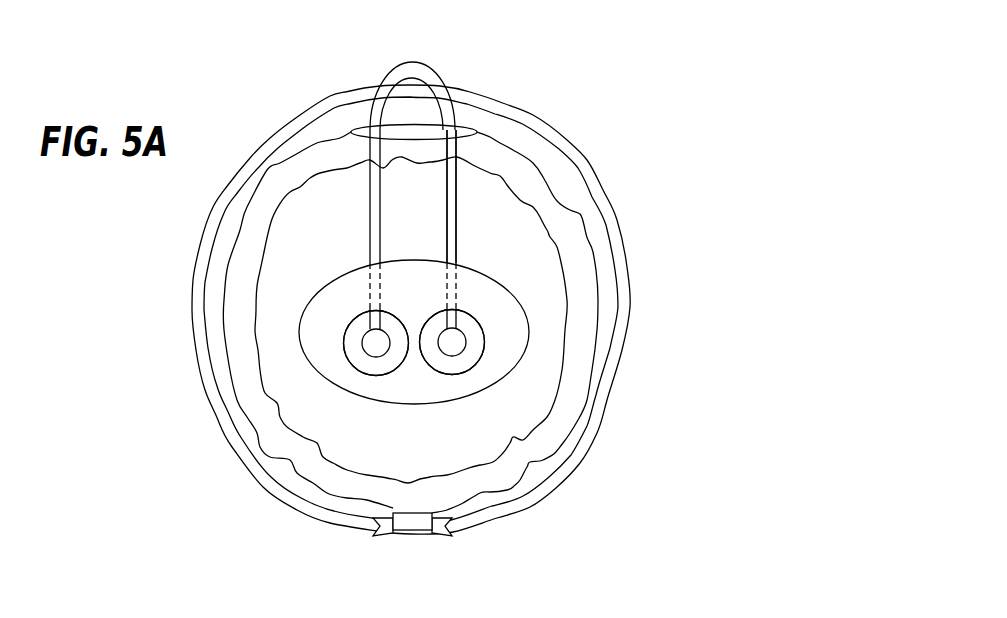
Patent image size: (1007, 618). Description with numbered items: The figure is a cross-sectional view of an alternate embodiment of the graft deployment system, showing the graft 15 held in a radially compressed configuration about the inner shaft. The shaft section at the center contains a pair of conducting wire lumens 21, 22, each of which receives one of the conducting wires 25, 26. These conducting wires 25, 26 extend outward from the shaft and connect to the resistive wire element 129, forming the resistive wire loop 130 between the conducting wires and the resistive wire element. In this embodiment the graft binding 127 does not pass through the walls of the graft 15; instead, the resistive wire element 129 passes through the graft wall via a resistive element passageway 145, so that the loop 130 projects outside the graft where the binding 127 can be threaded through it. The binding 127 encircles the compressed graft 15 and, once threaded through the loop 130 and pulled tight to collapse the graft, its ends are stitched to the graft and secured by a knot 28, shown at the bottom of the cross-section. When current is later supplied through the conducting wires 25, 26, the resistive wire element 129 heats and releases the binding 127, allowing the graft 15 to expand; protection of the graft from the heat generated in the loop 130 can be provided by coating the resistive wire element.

The graft binding 127 is at (586, 134).
The graft 15 is at (521, 151).
The resistive element passageway 145 is at (477, 124).
The resistive wire loop 130 is at (408, 62).
The resistive wire element 129 is at (456, 224).
The conducting wire 25 is at (375, 344).
The conducting wire 26 is at (455, 343).
The conducting wire lumen 21 is at (377, 376).
The conducting wire lumen 22 is at (467, 372).
The knot 28 is at (401, 547).